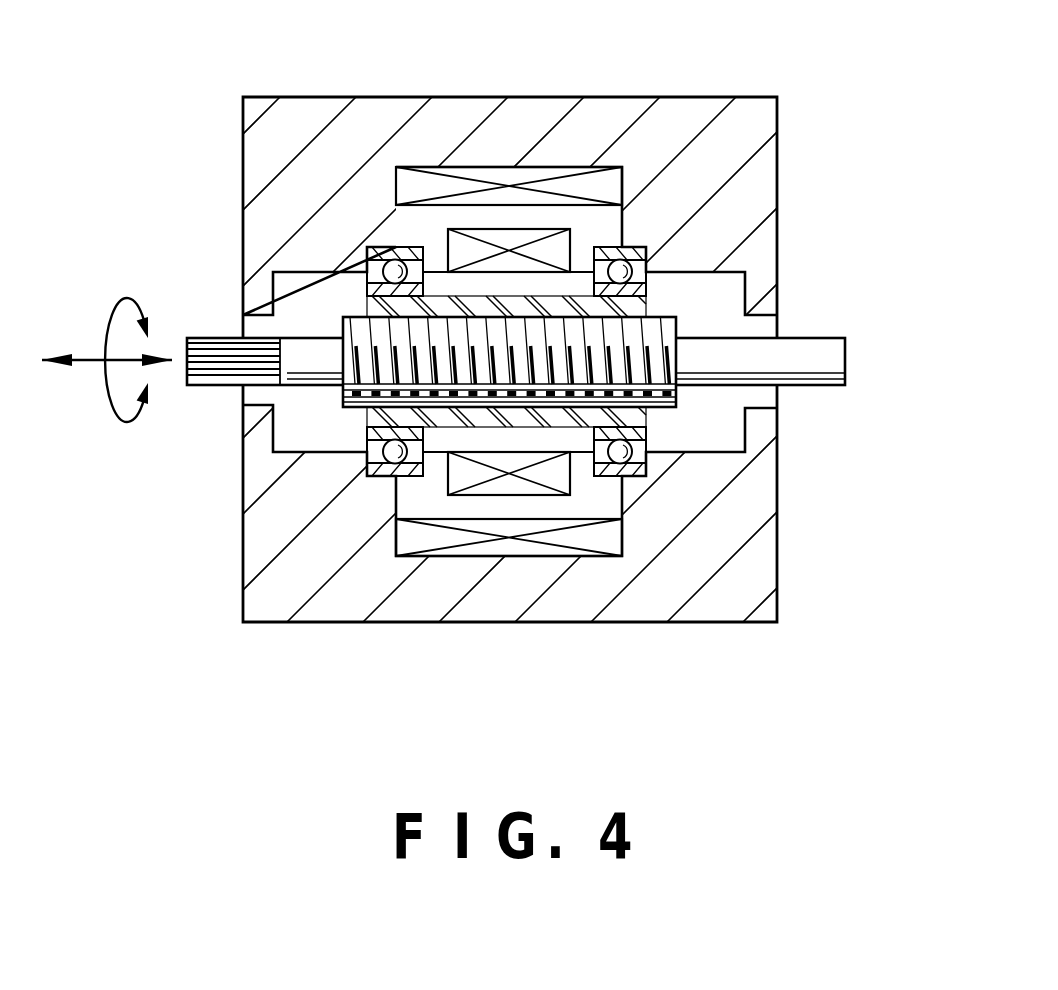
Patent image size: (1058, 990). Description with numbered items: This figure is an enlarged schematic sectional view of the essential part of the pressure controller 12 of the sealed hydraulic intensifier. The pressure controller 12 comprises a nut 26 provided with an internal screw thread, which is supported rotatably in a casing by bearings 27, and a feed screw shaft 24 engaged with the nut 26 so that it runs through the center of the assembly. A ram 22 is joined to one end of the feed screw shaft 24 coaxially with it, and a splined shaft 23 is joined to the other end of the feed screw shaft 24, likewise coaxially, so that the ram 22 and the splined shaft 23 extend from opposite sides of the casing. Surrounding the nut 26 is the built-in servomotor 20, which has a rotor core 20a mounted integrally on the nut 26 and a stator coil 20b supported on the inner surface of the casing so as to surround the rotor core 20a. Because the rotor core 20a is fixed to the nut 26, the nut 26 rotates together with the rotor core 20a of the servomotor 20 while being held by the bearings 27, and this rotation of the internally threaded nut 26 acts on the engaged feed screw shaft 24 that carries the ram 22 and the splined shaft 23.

The pressure controller 12 is at (790, 80).
The built-in servomotor 20 is at (375, 371).
The rotor core 20a is at (520, 248).
The stator coil 20b is at (487, 175).
The ram 22 is at (827, 338).
The splined shaft 23 is at (213, 336).
The feed screw shaft 24 is at (343, 393).
The nut 26 is at (576, 292).
The bearings 27 is at (632, 247).